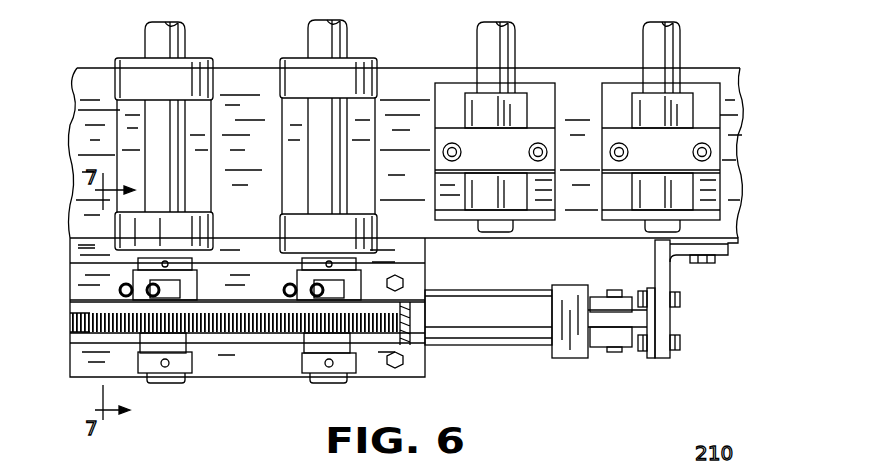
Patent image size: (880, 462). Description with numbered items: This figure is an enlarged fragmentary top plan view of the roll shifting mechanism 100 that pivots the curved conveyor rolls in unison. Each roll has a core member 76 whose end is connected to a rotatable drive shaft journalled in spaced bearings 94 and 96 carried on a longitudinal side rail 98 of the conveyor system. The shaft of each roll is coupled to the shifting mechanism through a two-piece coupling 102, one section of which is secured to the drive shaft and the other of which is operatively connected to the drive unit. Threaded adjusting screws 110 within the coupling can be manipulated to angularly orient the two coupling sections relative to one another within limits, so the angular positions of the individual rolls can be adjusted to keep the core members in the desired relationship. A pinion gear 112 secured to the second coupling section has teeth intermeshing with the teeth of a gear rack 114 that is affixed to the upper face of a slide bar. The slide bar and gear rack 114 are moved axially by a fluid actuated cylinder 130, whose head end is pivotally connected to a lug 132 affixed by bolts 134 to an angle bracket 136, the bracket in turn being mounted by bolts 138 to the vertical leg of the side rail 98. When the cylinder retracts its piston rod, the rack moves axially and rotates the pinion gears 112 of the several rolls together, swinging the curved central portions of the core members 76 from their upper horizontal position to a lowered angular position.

The core member 76 is at (315, 40).
The bearing 94 is at (283, 88).
The bearing 96 is at (282, 222).
The longitudinal side rail 98 is at (735, 205).
The roll shifting mechanism 100 is at (237, 383).
The two-piece coupling 102 is at (112, 290).
The threaded adjusting screws 110 is at (154, 284).
The pinion gear 112 is at (287, 333).
The gear rack 114 is at (72, 325).
The fluid actuated cylinder 130 is at (470, 346).
The lug 132 is at (648, 358).
The bolts 134 is at (682, 343).
The angle bracket 136 is at (663, 360).
The bolts 138 is at (705, 263).